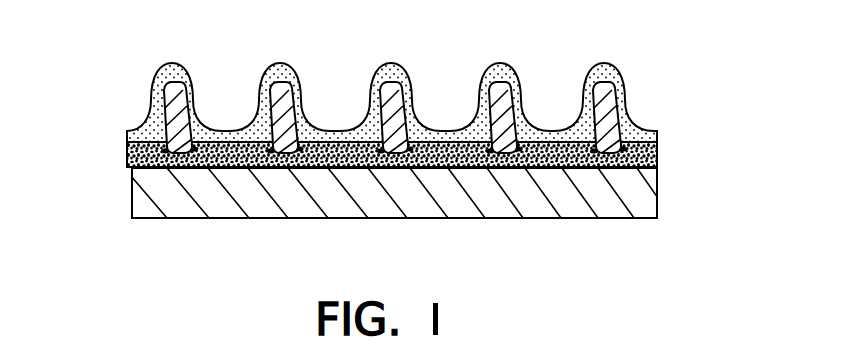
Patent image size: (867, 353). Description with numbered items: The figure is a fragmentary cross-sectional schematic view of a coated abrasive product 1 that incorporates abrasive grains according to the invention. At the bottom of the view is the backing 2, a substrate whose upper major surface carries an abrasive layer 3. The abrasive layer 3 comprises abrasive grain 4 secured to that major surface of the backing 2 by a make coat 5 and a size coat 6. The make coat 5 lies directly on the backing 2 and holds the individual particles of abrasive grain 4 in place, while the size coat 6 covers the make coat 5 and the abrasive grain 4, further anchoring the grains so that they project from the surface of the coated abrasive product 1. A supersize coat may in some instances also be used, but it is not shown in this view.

The coated abrasive product 1 is at (382, 132).
The backing 2 is at (225, 203).
The abrasive layer 3 is at (382, 97).
The abrasive grain 4 is at (279, 95).
The make coat 5 is at (128, 155).
The size coat 6 is at (147, 121).